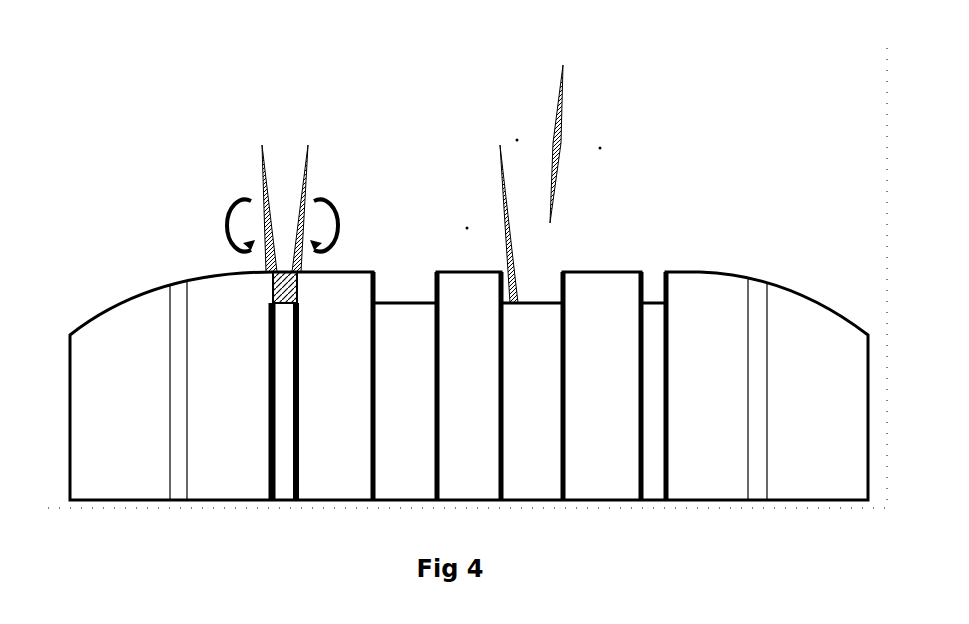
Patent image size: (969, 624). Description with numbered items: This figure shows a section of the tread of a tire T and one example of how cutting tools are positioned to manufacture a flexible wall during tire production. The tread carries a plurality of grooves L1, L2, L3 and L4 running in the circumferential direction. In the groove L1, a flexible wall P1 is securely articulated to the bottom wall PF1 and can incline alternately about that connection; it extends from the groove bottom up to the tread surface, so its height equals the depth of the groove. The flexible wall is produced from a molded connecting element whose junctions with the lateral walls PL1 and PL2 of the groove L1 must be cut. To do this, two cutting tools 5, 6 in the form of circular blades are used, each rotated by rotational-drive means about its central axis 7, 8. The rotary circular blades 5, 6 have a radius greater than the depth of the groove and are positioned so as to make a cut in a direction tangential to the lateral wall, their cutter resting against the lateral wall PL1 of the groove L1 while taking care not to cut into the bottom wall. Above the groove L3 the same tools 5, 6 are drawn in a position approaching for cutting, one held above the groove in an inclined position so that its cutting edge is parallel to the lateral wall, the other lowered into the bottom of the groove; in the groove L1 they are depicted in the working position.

The cutting tool 5 is at (310, 180).
The cutting tool 6 is at (262, 180).
The central axis 7 is at (310, 222).
The central axis 8 is at (268, 220).
The tire T is at (778, 375).
The flexible wall P1 is at (272, 287).
The lateral wall PL1 is at (272, 303).
The bottom wall PF1 is at (287, 307).
The lateral wall PL2 is at (297, 305).
The groove L1 is at (287, 492).
The groove L2 is at (410, 482).
The groove L3 is at (540, 482).
The groove L4 is at (645, 482).